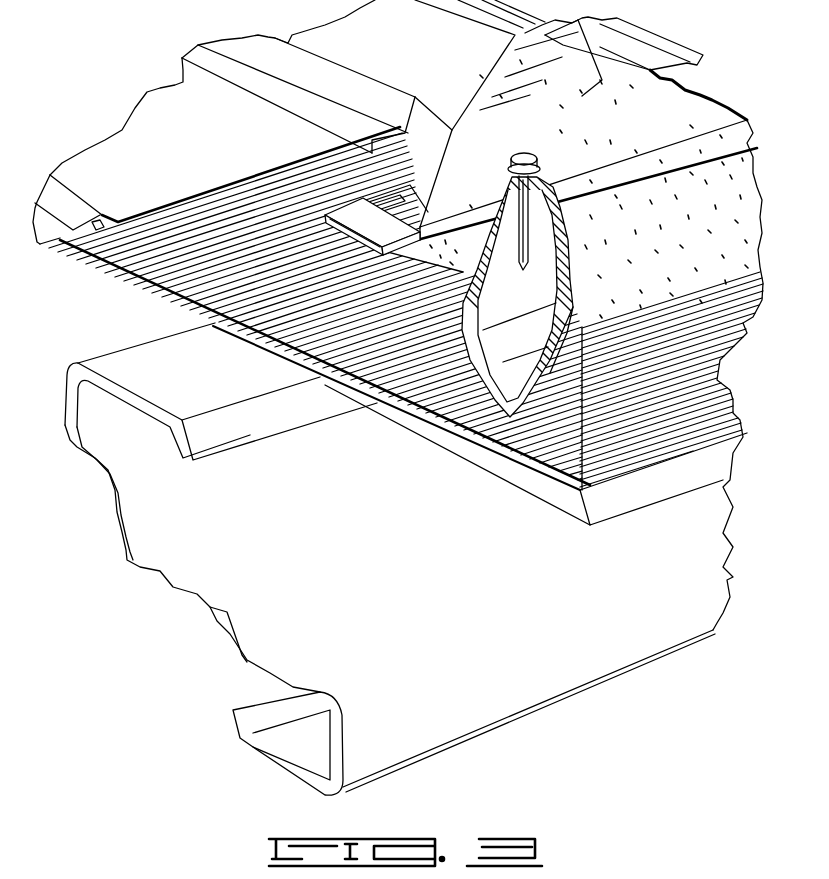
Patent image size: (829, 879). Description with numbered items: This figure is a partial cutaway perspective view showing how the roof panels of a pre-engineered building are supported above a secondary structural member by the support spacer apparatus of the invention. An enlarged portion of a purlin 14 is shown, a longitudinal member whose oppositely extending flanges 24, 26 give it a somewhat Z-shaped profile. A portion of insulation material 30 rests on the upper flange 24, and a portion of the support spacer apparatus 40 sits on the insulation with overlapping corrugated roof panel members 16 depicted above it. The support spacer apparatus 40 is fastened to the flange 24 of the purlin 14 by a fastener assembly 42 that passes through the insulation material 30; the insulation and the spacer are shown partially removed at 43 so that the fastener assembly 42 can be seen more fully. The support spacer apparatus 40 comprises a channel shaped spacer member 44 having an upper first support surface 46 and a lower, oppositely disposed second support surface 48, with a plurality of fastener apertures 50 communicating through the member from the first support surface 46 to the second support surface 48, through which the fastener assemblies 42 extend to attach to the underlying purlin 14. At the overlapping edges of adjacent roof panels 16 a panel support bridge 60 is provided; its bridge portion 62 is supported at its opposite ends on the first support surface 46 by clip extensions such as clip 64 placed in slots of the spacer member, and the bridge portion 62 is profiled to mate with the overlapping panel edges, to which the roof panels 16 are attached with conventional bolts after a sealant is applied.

The secondary structural member 14 is at (130, 556).
The corrugated roof panel member 16 is at (178, 117).
The flange 24 is at (153, 370).
The flange 26 is at (300, 756).
The insulation material 30 is at (728, 228).
The support spacer apparatus 40 is at (688, 118).
The fastener assembly 42 is at (512, 170).
The partially removed portion 43 is at (574, 290).
The channel shaped spacer member 44 is at (718, 127).
The first support surface 46 is at (668, 138).
The second support surface 48 is at (558, 275).
The fastener aperture 50 is at (345, 213).
The panel support bridge 60 is at (441, 161).
The bridge portion 62 is at (462, 140).
The clip 64 is at (393, 203).